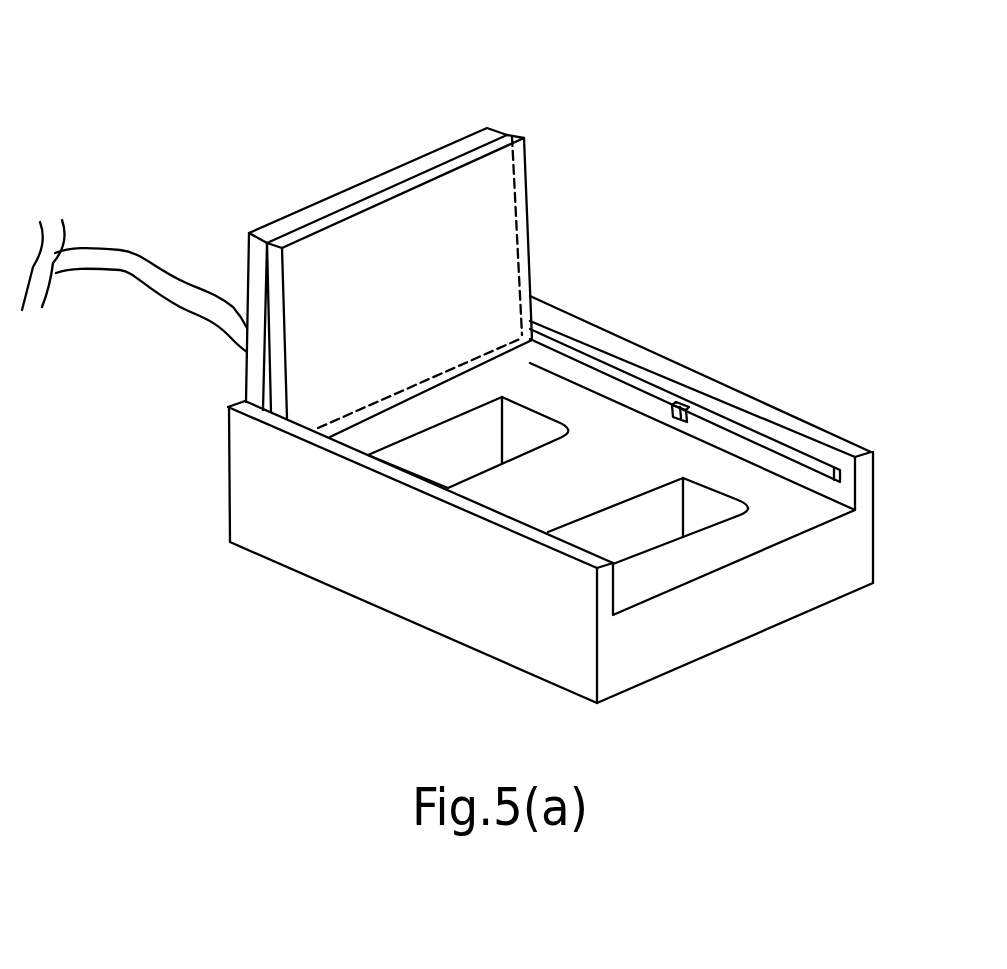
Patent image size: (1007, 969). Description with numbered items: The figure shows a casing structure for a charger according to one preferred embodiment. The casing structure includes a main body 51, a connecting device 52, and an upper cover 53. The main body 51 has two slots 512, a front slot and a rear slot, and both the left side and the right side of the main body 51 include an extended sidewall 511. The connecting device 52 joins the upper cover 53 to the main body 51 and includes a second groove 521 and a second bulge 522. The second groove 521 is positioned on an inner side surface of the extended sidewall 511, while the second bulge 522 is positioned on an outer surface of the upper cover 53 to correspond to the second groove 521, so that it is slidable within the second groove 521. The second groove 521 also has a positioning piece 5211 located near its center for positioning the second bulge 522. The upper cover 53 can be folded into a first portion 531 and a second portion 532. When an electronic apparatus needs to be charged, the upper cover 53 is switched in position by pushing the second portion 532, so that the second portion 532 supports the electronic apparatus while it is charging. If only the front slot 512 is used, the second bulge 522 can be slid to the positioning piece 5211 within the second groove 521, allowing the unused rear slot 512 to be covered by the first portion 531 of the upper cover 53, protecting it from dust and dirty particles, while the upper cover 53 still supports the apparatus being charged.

The main body 51 is at (838, 568).
The extended sidewall 511 is at (603, 585).
The slot 512 is at (415, 462).
The connecting device 52 is at (707, 388).
The second groove 521 is at (787, 447).
The positioning piece 5211 is at (734, 387).
The second bulge 522 is at (533, 307).
The upper cover 53 is at (462, 253).
The first portion 531 is at (488, 128).
The second portion 532 is at (528, 160).